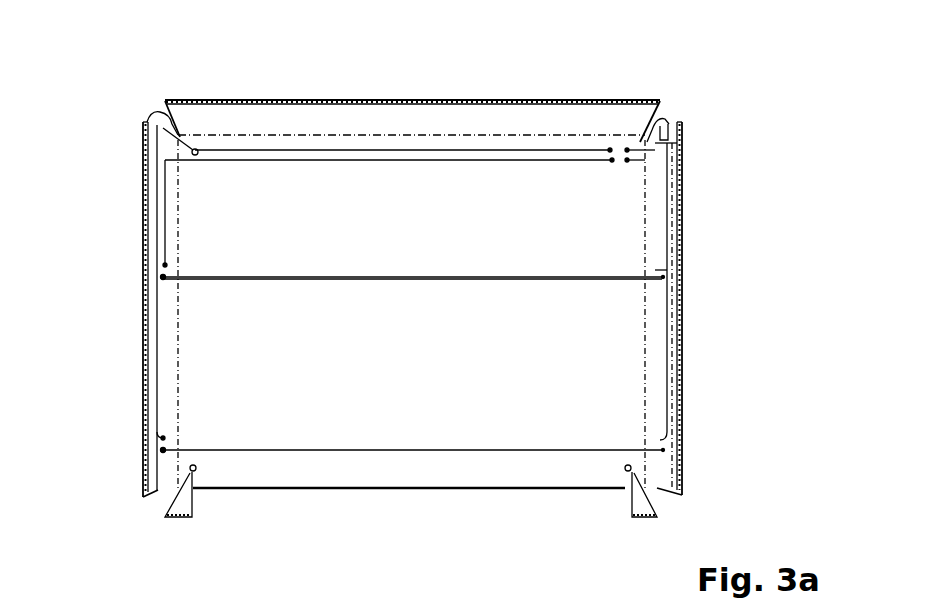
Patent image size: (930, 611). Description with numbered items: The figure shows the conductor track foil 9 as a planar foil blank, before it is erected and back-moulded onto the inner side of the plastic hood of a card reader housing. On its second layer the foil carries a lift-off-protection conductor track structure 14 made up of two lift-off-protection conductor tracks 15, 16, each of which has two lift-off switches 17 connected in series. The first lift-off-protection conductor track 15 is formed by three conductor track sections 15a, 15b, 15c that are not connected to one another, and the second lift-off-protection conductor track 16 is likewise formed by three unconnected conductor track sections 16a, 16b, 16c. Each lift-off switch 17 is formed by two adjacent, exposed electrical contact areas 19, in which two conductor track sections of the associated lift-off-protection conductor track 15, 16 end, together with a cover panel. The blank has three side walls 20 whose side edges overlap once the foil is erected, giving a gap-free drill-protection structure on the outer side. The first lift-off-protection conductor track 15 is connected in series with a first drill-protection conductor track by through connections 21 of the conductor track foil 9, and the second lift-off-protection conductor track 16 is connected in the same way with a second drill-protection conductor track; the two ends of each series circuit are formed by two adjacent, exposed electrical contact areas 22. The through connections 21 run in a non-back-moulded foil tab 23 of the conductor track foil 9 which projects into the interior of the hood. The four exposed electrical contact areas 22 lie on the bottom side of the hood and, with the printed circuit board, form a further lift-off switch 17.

The conductor track foil 9 is at (142, 85).
The lift-off-protection conductor track structure 14 is at (288, 157).
The first lift-off-protection conductor track 15 is at (478, 275).
The conductor track section 15a is at (165, 172).
The conductor track section 15b is at (395, 276).
The conductor track section 15c is at (676, 142).
The second lift-off-protection conductor track 16 is at (458, 454).
The conductor track section 16a is at (157, 400).
The conductor track section 16b is at (385, 490).
The conductor track section 16c is at (683, 128).
The lift-off switch 17 is at (160, 276).
The exposed electrical contact area 19 is at (657, 270).
The side wall 20 is at (228, 125).
The through connection 21 is at (666, 118).
The exposed electrical contact area 22 is at (610, 148).
The foil tab 23 is at (669, 122).